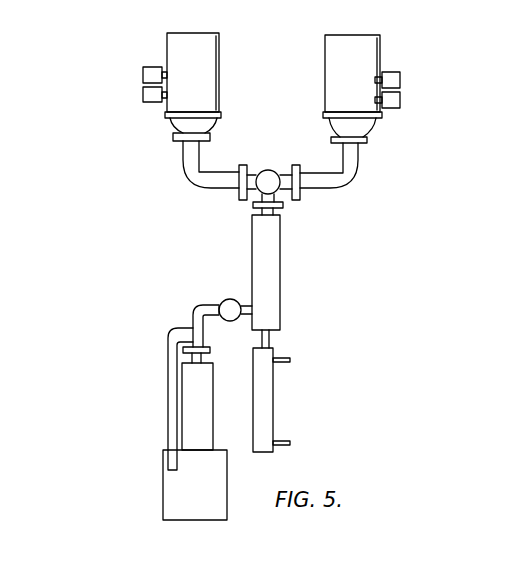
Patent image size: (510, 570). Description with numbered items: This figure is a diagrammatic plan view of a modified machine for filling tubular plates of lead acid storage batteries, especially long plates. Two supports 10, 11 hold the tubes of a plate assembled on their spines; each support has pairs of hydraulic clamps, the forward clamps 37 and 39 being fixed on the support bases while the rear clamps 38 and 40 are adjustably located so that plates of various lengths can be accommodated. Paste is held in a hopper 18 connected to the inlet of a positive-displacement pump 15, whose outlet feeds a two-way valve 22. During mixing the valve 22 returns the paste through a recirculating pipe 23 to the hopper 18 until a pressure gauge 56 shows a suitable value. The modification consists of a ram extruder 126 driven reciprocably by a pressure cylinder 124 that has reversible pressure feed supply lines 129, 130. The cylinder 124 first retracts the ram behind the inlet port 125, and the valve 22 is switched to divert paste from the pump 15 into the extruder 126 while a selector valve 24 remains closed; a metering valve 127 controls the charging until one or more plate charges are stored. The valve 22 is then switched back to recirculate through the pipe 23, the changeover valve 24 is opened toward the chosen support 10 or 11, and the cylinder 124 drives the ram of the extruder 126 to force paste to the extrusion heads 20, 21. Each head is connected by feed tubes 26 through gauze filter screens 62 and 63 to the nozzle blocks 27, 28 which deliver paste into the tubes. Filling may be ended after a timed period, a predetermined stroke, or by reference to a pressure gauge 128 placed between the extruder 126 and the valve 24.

The support 10 is at (380, 47).
The support 11 is at (166, 47).
The pump 15 is at (214, 430).
The paste hopper 18 is at (163, 497).
The extrusion head 20 is at (358, 150).
The extrusion head 21 is at (173, 138).
The two-way valve 22 is at (191, 326).
The recirculating pipe 23 is at (168, 412).
The selector valve 24 is at (268, 183).
The feed tubes 26 is at (174, 126).
The nozzle block 27 is at (380, 117).
The nozzle block 28 is at (221, 115).
The hydraulic clamp 37 is at (400, 98).
The hydraulic clamp 38 is at (400, 78).
The hydraulic clamp 39 is at (143, 95).
The hydraulic clamp 40 is at (143, 75).
The pressure gauge 56 is at (208, 348).
The gauze filter screen 62 is at (300, 190).
The gauze filter screen 63 is at (239, 190).
The pressure cylinder 124 is at (273, 385).
The inlet port 125 is at (240, 300).
The ram extruder 126 is at (280, 262).
The metering valve 127 is at (224, 301).
The pressure gauge 128 is at (283, 208).
The pressure feed supply line 129 is at (286, 358).
The pressure feed supply line 130 is at (285, 441).